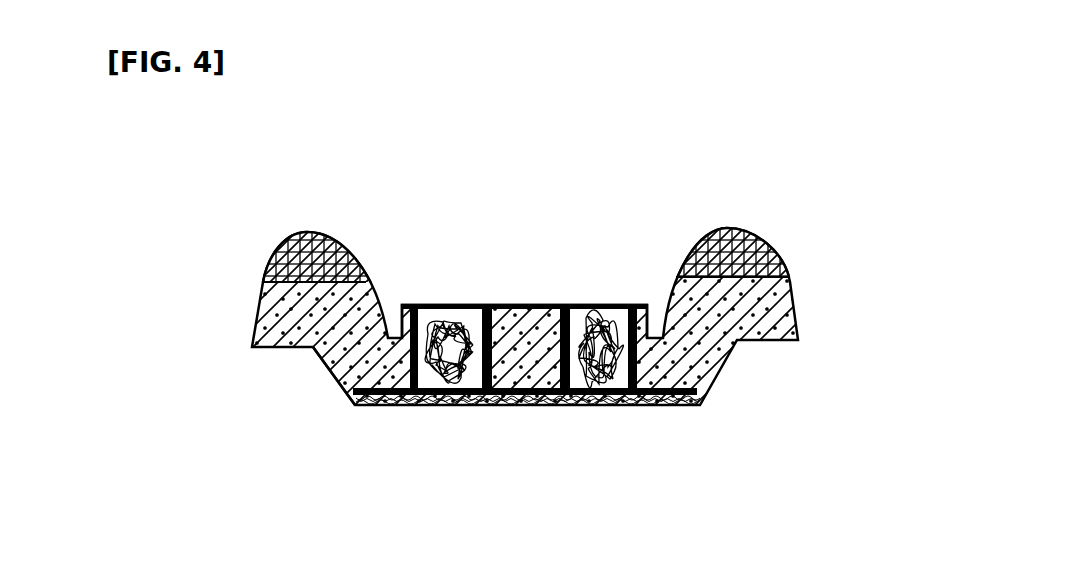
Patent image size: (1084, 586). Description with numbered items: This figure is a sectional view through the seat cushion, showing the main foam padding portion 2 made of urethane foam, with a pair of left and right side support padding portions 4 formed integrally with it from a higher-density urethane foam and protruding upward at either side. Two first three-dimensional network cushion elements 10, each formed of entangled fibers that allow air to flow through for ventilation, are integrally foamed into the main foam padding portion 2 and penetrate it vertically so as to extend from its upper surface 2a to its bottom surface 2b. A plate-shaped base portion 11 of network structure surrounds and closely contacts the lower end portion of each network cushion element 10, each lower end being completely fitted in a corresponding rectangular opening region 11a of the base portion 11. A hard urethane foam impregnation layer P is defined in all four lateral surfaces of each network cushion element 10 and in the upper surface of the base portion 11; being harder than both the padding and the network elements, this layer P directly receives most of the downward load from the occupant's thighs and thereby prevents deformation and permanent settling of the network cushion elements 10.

The main foam padding portion 2 is at (789, 308).
The upper surface 2a is at (540, 305).
The bottom surface 2b is at (334, 375).
The side support padding portion 4 is at (293, 260).
The first three-dimensional network cushion element 10 is at (462, 408).
The base portion 11 is at (668, 408).
The rectangular opening region 11a is at (445, 408).
The urethane foam impregnation layer P is at (506, 305).